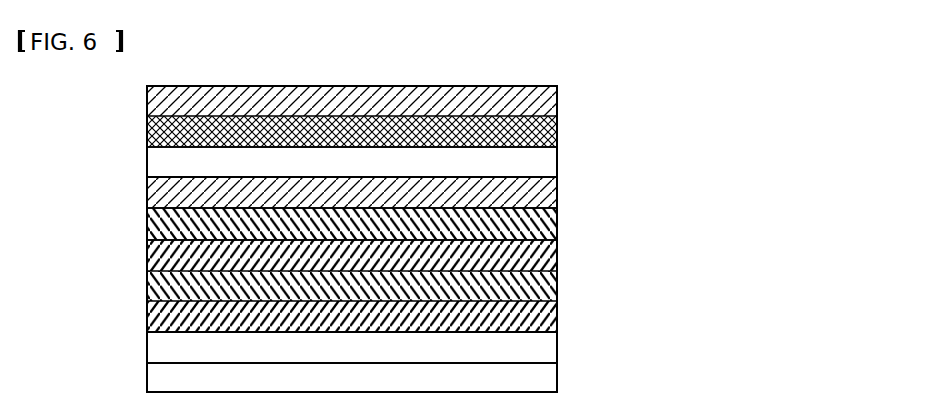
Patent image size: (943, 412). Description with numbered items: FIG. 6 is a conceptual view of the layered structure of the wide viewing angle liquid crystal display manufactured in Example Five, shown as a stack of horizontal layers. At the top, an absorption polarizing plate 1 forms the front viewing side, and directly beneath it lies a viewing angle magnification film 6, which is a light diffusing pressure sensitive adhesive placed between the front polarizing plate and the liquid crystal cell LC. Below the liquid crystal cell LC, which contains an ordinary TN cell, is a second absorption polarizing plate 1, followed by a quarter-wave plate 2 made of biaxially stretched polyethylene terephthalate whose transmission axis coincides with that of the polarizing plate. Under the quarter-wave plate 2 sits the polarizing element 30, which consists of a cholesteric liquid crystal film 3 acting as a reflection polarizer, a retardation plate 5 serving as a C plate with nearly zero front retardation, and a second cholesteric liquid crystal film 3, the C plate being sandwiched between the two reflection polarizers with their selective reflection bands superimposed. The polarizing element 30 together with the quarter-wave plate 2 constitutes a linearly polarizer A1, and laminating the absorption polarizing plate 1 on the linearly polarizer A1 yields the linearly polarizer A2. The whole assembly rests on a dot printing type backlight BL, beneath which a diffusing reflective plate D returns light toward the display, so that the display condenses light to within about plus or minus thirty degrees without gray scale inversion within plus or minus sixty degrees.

The absorption polarizing plate 1 is at (556, 103).
The viewing angle magnification film 6 is at (556, 130).
The liquid crystal cell LC is at (542, 167).
The λ/4 plate 2 is at (545, 226).
The cholesteric liquid crystal film 3 is at (556, 258).
The retardation plate (C plate) 5 is at (556, 290).
The polarizing element 30 is at (684, 245).
The linearly polarizer A1 is at (497, 270).
The linearly polarizer A2 is at (538, 254).
The backlight BL is at (545, 351).
The diffusing reflective plate D is at (545, 382).